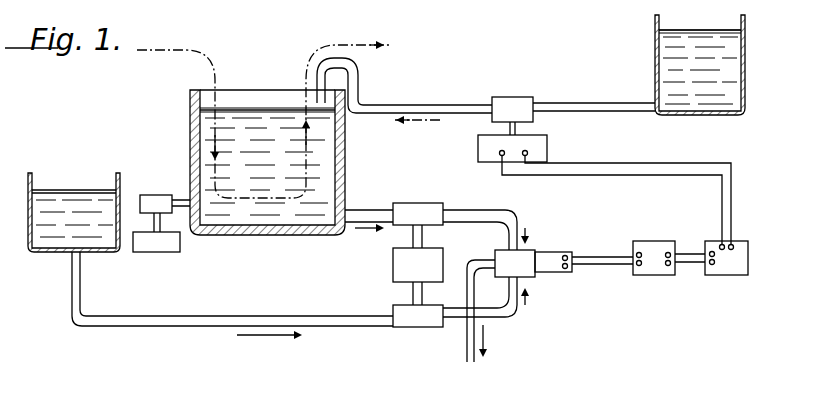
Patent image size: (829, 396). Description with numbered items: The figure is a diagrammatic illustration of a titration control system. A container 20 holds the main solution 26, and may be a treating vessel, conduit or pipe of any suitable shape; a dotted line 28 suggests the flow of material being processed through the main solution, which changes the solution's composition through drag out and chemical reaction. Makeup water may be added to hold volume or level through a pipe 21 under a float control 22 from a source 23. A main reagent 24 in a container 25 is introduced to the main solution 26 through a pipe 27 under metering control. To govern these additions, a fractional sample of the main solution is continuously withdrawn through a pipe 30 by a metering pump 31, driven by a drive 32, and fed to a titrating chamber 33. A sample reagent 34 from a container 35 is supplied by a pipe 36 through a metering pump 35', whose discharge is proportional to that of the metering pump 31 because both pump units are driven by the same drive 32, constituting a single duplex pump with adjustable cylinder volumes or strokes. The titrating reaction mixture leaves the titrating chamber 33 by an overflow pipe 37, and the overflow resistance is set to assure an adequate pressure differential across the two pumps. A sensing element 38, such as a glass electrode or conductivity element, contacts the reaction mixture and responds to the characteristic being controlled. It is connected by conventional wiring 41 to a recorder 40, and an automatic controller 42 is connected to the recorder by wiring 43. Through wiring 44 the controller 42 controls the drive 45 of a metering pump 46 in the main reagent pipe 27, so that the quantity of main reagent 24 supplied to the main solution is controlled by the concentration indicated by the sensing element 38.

The container 20 is at (190, 103).
The pipe 21 is at (183, 200).
The float control 22 is at (158, 195).
The source 23 is at (170, 253).
The main reagent 24 is at (735, 45).
The container 25 is at (655, 57).
The main solution 26 is at (251, 108).
The pipe 27 is at (432, 104).
The dotted line 28 is at (201, 54).
The pipe 30 is at (369, 207).
The metering pump 31 is at (421, 203).
The drive 32 is at (393, 272).
The titrating chamber 33 is at (497, 252).
The sample reagent 34 is at (61, 190).
The container 35 is at (206, 289).
The metering pump 35' is at (410, 336).
The pipe 36 is at (298, 315).
The overflow pipe 37 is at (468, 343).
The sensing element 38 is at (554, 252).
The recorder 40 is at (646, 241).
The wiring 41 is at (601, 257).
The automatic controller 42 is at (746, 241).
The wiring 43 is at (688, 253).
The wiring 44 is at (618, 162).
The drive 45 is at (478, 150).
The metering pump 46 is at (511, 97).